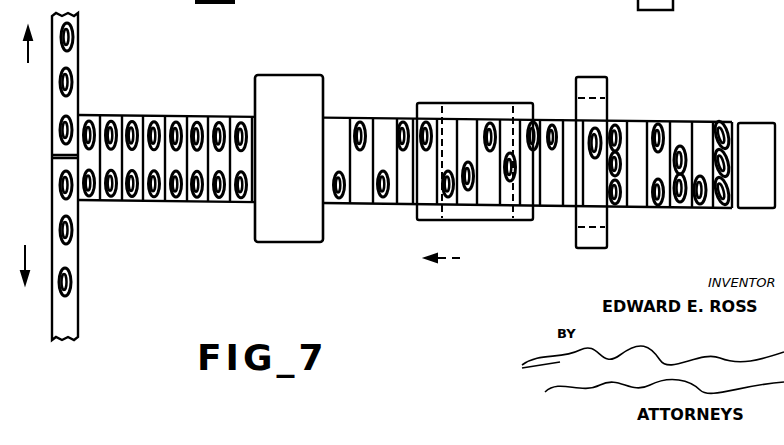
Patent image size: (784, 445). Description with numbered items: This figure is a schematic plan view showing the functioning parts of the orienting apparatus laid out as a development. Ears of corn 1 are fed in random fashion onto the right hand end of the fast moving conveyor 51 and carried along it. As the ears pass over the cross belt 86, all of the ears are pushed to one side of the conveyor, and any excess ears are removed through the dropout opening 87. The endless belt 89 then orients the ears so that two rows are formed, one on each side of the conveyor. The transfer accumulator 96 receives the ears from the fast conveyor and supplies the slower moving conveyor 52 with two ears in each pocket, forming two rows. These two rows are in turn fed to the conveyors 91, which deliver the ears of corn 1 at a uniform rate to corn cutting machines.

The ears of corn 1 is at (660, 207).
The fast moving conveyor 51 is at (682, 121).
The slower moving conveyor 52 is at (153, 116).
The cross belt 86 is at (604, 108).
The dropout opening 87 is at (553, 202).
The endless belt 89 is at (473, 110).
The conveyors 91 is at (78, 317).
The transfer accumulator 96 is at (312, 110).